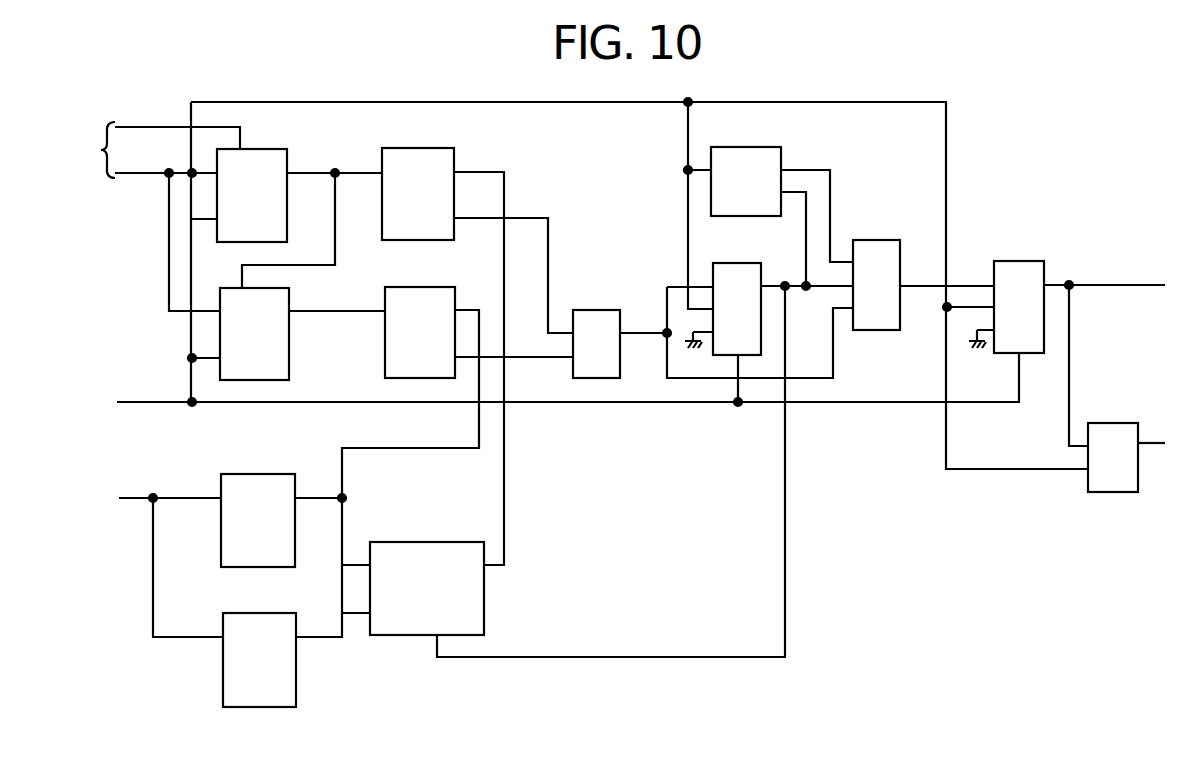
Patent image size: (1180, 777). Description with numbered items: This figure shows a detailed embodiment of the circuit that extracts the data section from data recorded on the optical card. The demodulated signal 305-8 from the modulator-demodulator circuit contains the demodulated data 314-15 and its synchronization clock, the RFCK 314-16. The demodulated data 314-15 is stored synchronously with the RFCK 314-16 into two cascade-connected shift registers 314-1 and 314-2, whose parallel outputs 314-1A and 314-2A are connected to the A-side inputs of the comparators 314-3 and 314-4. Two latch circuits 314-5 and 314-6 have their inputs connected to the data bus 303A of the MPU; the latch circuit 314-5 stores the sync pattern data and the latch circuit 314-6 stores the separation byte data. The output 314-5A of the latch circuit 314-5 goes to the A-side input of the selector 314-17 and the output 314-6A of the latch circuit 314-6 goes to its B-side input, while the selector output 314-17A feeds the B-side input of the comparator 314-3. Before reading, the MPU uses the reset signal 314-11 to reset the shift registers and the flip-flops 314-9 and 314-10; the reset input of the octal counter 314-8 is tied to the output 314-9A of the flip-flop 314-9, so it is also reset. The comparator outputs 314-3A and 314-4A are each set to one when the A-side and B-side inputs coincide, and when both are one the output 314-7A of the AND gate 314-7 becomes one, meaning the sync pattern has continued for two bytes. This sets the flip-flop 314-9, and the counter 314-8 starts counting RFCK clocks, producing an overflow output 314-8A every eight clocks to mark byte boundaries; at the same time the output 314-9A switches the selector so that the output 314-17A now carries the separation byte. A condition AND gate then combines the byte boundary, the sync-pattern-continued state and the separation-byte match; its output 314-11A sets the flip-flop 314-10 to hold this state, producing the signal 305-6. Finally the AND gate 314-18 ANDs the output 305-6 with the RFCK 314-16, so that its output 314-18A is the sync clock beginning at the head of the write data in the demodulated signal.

The demodulated signal 305-8 is at (68, 150).
The demodulated data 314-15 is at (128, 127).
The RFCK 314-16 is at (129, 175).
The shift register 314-1 is at (247, 148).
The shift register output 314-1A is at (322, 172).
The shift register 314-2 is at (289, 348).
The shift register output 314-2A is at (340, 311).
The comparator 314-3 is at (452, 148).
The comparator output 314-3A is at (523, 218).
The comparator 314-4 is at (418, 287).
The comparator output 314-4A is at (518, 360).
The latch circuit 314-5 is at (243, 474).
The latch circuit output 314-5A is at (370, 441).
The latch circuit 314-6 is at (240, 613).
The latch circuit output 314-6A is at (333, 640).
The AND gate 314-7 is at (580, 310).
The AND gate output 314-7A is at (833, 368).
The octal counter 314-8 is at (780, 147).
The overflow output 314-8A is at (830, 186).
The flip-flop 314-9 is at (717, 262).
The flip-flop output 314-9A is at (786, 448).
The flip-flop 314-10 is at (1040, 261).
The reset signal 314-11 is at (127, 402).
The AND gate output 314-11A is at (962, 285).
The selector 314-17 is at (400, 542).
The selector output 314-17A is at (506, 505).
The AND gate 314-18 is at (1088, 490).
The AND gate output 314-18A is at (1155, 445).
The data bus 303A is at (128, 497).
The flip-flop output 305-6 is at (1085, 285).